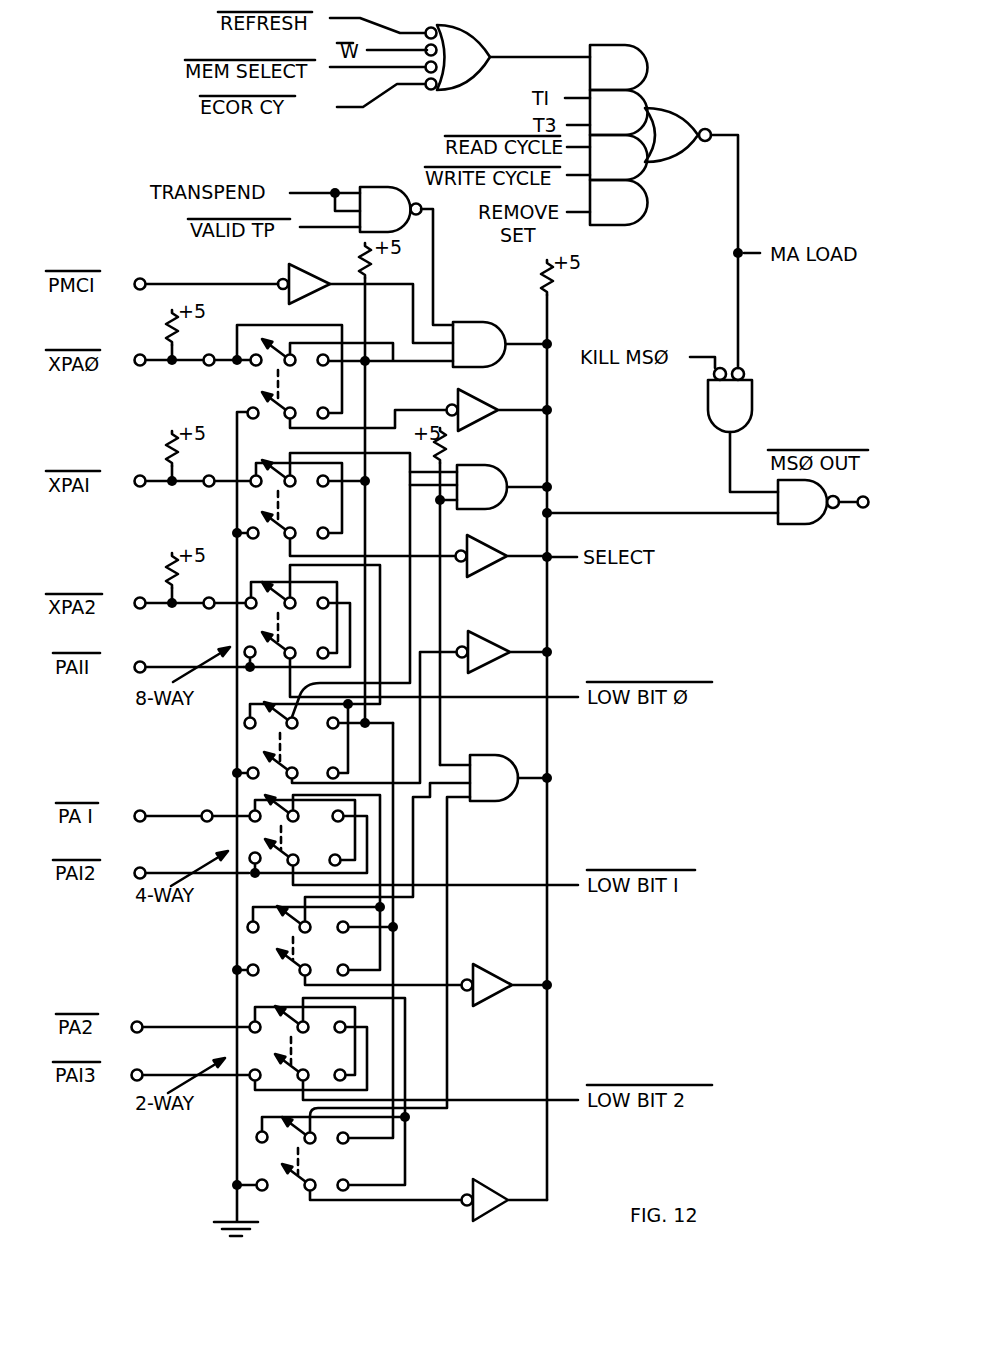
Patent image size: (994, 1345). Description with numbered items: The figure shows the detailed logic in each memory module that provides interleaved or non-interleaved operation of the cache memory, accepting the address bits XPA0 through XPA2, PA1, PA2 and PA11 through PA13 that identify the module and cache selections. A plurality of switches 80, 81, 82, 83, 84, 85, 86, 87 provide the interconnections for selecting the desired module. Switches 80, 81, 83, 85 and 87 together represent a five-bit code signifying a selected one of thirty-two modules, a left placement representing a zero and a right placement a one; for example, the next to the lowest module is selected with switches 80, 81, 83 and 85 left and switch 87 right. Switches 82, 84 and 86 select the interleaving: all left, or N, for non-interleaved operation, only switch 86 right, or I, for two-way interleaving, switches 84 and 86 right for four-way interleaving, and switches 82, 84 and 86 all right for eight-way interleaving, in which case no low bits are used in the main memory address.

The switch 80 is at (315, 381).
The switch 81 is at (271, 508).
The switch 82 is at (264, 627).
The switch 83 is at (286, 749).
The switch 84 is at (269, 836).
The switch 85 is at (282, 950).
The switch 86 is at (294, 1091).
The switch 87 is at (262, 1162).